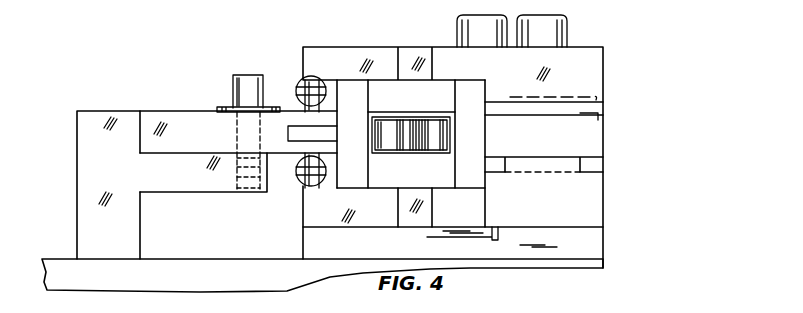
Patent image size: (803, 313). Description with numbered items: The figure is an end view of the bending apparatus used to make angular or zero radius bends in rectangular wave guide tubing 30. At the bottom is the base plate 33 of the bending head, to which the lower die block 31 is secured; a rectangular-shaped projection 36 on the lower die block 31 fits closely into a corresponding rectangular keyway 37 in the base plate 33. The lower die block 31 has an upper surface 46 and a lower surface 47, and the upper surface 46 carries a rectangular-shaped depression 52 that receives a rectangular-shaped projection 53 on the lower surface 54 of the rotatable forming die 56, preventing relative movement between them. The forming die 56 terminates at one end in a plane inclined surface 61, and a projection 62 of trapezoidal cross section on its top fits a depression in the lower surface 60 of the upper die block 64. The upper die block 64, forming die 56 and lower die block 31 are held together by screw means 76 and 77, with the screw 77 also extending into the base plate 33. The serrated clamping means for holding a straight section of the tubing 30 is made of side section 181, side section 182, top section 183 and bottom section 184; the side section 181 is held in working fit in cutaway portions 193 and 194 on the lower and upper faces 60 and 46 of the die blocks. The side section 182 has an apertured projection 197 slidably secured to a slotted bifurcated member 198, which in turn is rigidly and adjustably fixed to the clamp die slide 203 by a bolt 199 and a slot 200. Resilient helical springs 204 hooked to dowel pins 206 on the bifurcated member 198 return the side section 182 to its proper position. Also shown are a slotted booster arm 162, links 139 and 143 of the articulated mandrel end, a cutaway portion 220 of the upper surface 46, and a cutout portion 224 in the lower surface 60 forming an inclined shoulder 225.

The rectangular wave guide tubing 30 is at (371, 141).
The lower die block 31 is at (607, 205).
The base plate 33 is at (607, 248).
The rectangular-shaped projection 36 is at (491, 228).
The rectangular keyway 37 is at (493, 241).
The upper surface of the lower die block 46 is at (498, 160).
The lower surface of the lower die block 47 is at (603, 222).
The rectangular-shaped depression 52 is at (595, 177).
The rectangular-shaped projection 53 is at (525, 162).
The lower surface of the forming die 54 is at (593, 158).
The rotatable forming die 56 is at (496, 147).
The lower surface of the upper die block 60 is at (605, 122).
The plane inclined surface 61 is at (597, 131).
The projection 62 is at (545, 102).
The upper die block 64 is at (600, 26).
The screw means 76 is at (462, 27).
The screw means 77 is at (558, 20).
The link 139 is at (437, 153).
The link 143 is at (402, 153).
The slotted booster arm 162 is at (432, 32).
The side section 181 is at (481, 94).
The side section 182 is at (367, 100).
The top section 183 is at (435, 83).
The bottom section 184 is at (388, 190).
The cutaway portion 193 is at (479, 82).
The cutaway portion 194 is at (462, 183).
The apertured projection 197 is at (306, 134).
The slotted bifurcated member 198 is at (163, 112).
The bolt 199 is at (233, 91).
The slot 200 is at (238, 126).
The clamp die slide 203 is at (77, 162).
The resilient helical spring 204 is at (312, 85).
The dowel pin 206 is at (303, 80).
The cutaway portion 220 is at (545, 165).
The cutout portion 224 is at (603, 97).
The inclined shoulder 225 is at (513, 103).